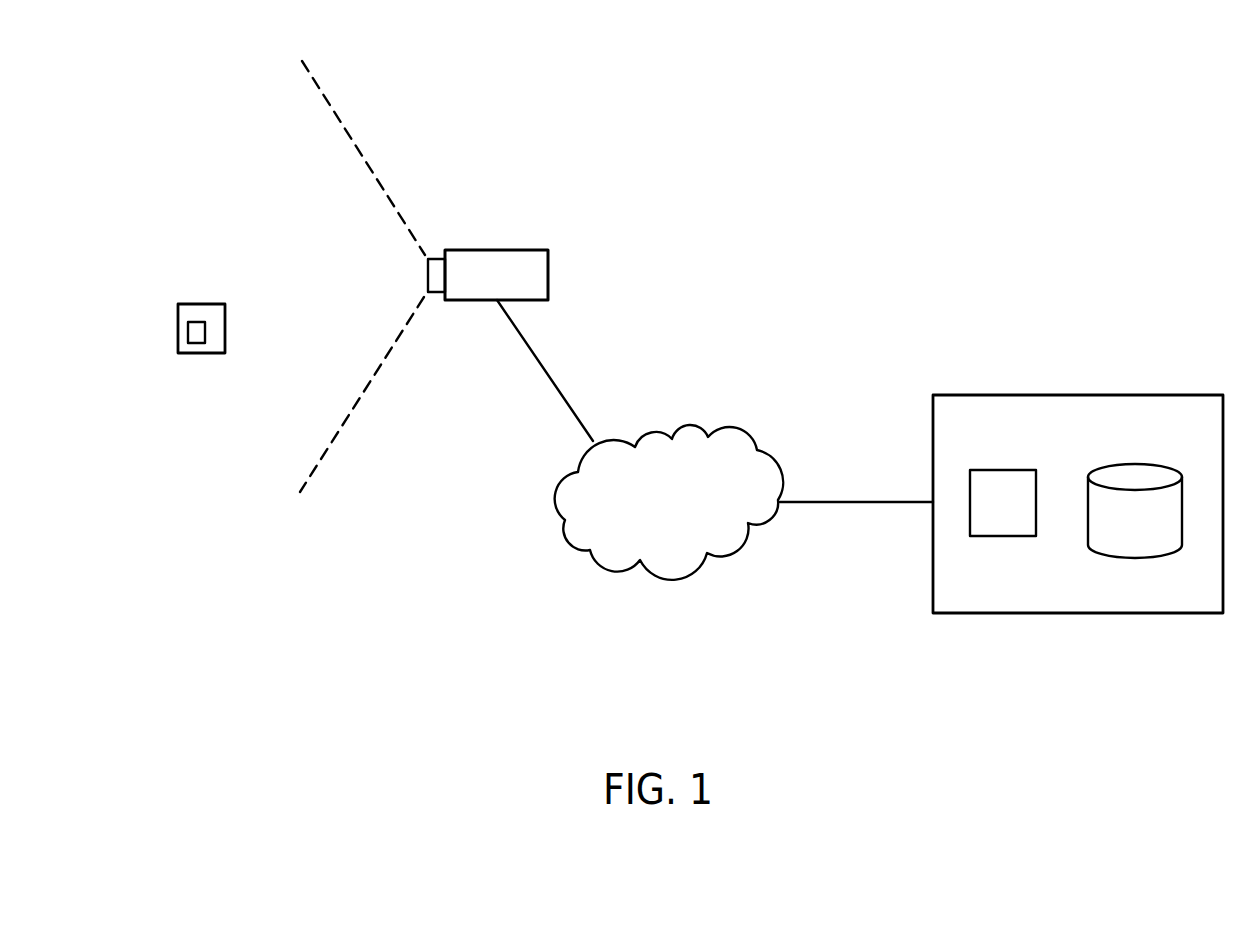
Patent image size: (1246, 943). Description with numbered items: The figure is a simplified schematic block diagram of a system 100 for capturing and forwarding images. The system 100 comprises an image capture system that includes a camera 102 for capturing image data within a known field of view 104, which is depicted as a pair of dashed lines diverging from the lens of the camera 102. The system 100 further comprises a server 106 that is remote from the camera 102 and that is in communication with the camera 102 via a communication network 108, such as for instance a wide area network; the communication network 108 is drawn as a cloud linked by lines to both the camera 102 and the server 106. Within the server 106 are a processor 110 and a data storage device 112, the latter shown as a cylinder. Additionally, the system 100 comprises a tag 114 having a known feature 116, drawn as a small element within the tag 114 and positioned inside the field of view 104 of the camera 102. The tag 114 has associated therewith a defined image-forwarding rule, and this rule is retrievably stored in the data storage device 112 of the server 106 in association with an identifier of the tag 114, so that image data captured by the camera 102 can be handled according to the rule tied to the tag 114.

The system 100 is at (473, 665).
The camera 102 is at (548, 270).
The field of view 104 is at (325, 453).
The server 106 is at (1044, 395).
The communication network 108 is at (730, 562).
The processor 110 is at (1003, 536).
The data storage device 112 is at (1173, 463).
The tag 114 is at (225, 335).
The known feature 116 is at (197, 343).